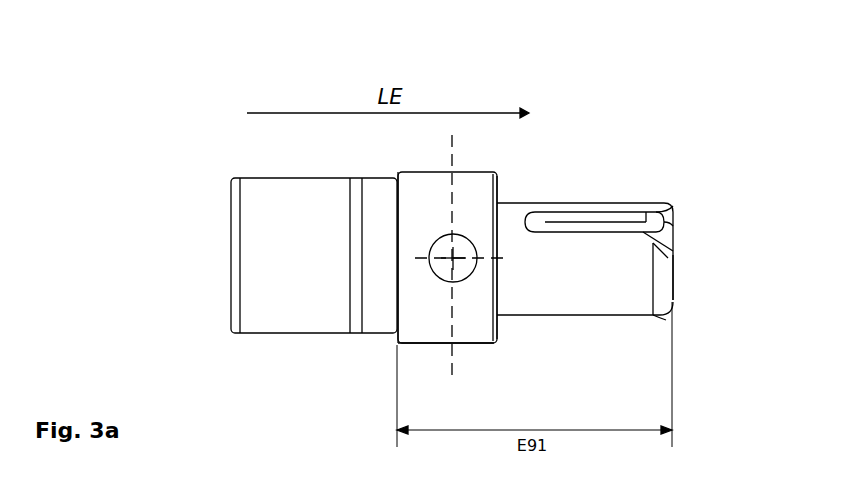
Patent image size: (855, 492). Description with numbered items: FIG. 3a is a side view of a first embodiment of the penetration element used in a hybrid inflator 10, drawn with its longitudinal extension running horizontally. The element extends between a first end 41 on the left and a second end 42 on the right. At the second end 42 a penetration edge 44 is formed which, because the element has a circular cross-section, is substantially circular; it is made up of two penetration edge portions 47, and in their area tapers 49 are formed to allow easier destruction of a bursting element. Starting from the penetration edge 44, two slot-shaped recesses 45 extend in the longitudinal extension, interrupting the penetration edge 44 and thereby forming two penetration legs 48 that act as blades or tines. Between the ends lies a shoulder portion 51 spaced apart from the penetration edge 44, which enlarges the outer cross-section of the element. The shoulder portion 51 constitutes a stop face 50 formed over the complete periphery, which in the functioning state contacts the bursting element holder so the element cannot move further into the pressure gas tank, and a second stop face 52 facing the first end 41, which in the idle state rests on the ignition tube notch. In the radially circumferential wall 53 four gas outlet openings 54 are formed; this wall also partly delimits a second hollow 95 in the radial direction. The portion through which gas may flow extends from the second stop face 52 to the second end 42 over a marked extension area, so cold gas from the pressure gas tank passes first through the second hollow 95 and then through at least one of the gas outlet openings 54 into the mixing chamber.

The hybrid inflator 10 is at (210, 98).
The first end 41 is at (231, 268).
The second end 42 is at (676, 213).
The penetration edge 44 is at (674, 290).
The recesses 45 is at (597, 210).
The penetration edge portions 47 is at (676, 222).
The penetration legs 48 is at (552, 203).
The tapers 49 is at (667, 324).
The stop face 50 is at (497, 194).
The shoulder portion 51 is at (408, 345).
The second stop face 52 is at (396, 345).
The radially circumferential wall 53 is at (420, 190).
The gas outlet openings 54 is at (457, 272).
The second hollow 95 is at (673, 250).